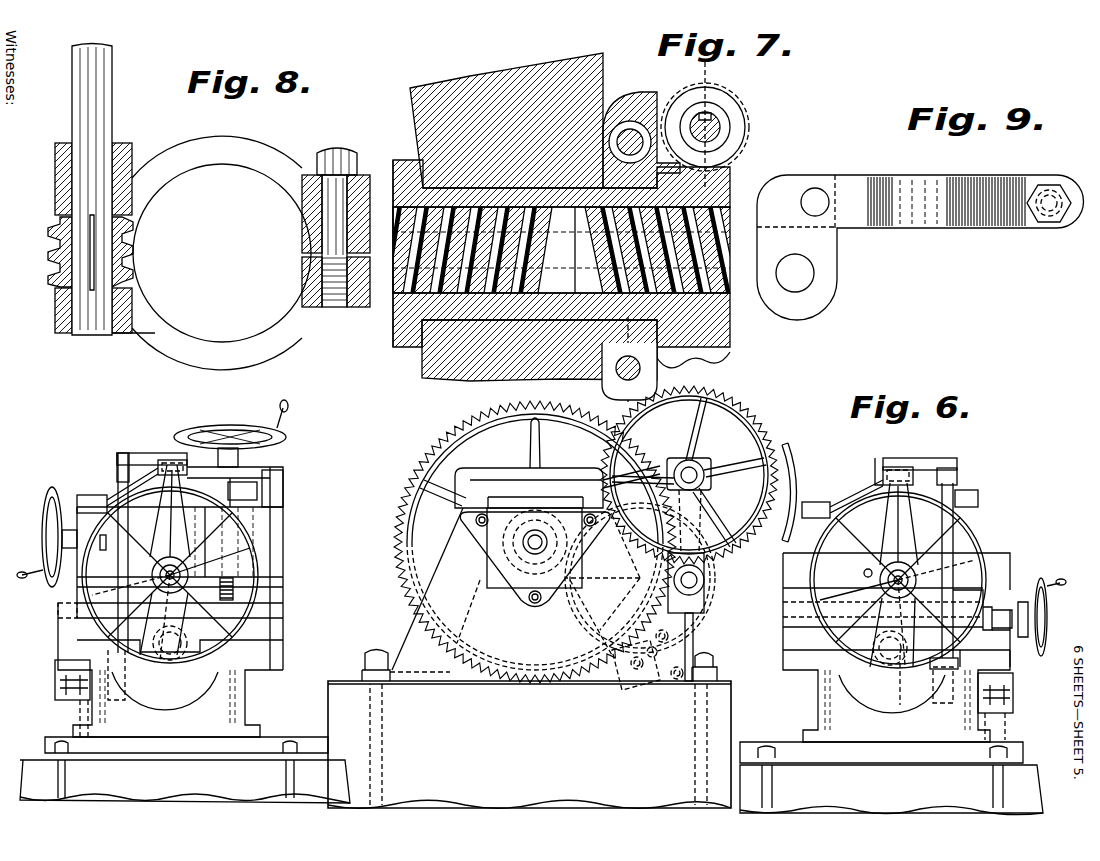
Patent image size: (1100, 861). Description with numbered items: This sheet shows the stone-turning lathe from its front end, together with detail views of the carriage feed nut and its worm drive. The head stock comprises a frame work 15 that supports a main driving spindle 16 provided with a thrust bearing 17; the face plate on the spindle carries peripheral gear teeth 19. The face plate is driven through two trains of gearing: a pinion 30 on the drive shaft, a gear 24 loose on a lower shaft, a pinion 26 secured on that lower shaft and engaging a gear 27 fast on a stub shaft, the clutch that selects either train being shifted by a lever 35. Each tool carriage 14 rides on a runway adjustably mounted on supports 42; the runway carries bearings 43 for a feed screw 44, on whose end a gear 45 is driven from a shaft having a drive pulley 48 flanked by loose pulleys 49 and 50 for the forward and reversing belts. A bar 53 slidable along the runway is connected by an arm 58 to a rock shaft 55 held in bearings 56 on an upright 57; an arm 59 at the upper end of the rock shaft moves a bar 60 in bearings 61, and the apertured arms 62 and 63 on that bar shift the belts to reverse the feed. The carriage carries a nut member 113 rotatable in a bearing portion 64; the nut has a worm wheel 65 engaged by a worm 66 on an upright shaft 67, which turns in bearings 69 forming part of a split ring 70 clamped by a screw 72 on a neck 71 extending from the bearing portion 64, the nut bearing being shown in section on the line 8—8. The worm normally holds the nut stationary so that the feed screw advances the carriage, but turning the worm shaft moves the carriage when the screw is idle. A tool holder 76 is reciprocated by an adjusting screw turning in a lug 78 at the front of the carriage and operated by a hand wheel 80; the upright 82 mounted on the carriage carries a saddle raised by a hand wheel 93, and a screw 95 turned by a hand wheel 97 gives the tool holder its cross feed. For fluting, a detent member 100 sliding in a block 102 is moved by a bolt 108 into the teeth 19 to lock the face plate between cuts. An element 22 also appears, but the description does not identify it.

In FIG. 7, the section line 8— 8 is at (658, 239).
In FIG. 6, the tool carriage 14 is at (283, 652).
In FIG. 6, the frame work 15 is at (452, 524).
In FIG. 6, the main driving spindle 16 is at (527, 560).
In FIG. 6, the thrust bearing 17 is at (492, 535).
In FIG. 6, the gear teeth 19 is at (452, 443).
In FIG. 6, the gear 22 is at (786, 452).
In FIG. 6, the gear 24 is at (733, 655).
In FIG. 6, the pinion 26 is at (706, 590).
In FIG. 6, the gear 27 is at (764, 415).
In FIG. 6, the pinion 30 is at (706, 466).
In FIG. 6, the lever 35 is at (790, 466).
In FIG. 6, the supports 42 is at (60, 720).
In FIG. 6, the bearings 43 is at (175, 660).
In FIG. 7, the feed screw 44 is at (735, 215).
In FIG. 6, the gear 45 is at (178, 705).
In FIG. 6, the pulley 48 is at (960, 563).
In FIG. 6, the loose pulley 49 is at (230, 630).
In FIG. 6, the loose pulley 50 is at (965, 557).
In FIG. 6, the bar 53 is at (55, 690).
In FIG. 6, the rock shaft 55 is at (150, 565).
In FIG. 6, the bearings 56 is at (117, 465).
In FIG. 6, the upright 57 is at (175, 530).
In FIG. 6, the arm 58 is at (82, 700).
In FIG. 6, the arm 59 is at (160, 442).
In FIG. 6, the bar 60 is at (172, 460).
In FIG. 6, the bearings 61 is at (872, 455).
In FIG. 6, the apertured arm 62 is at (95, 486).
In FIG. 6, the apertured arm 63 is at (250, 482).
In FIG. 7, the bearing portion 64 is at (480, 55).
In FIG. 7, the worm wheel 65 is at (730, 340).
In FIG. 8, the worm 66 is at (48, 245).
In FIG. 7, the worm 66 is at (743, 131).
In FIG. 8, the upright shaft 67 is at (72, 95).
In FIG. 7, the upright shaft 67 is at (714, 108).
In FIG. 8, the bearings 69 is at (55, 177).
In FIG. 9, the bearings 69 is at (823, 283).
In FIG. 8, the split ring 70 is at (272, 170).
In FIG. 7, the split ring 70 is at (647, 90).
In FIG. 9, the split ring 70 is at (980, 230).
In FIG. 7, the neck 71 is at (607, 103).
In FIG. 8, the screw 72 is at (352, 150).
In FIG. 7, the screw 72 is at (618, 378).
In FIG. 9, the screw 72 is at (1048, 222).
In FIG. 6, the tool holder 76 is at (805, 560).
In FIG. 6, the lug 78 is at (998, 615).
In FIG. 6, the hand wheel 80 is at (1048, 615).
In FIG. 6, the upright 82 is at (283, 475).
In FIG. 6, the hand wheel 93 is at (240, 430).
In FIG. 6, the screw 95 is at (233, 590).
In FIG. 6, the hand wheel 97 is at (42, 518).
In FIG. 6, the detent member 100 is at (665, 680).
In FIG. 6, the block 102 is at (645, 677).
In FIG. 6, the bolt 108 is at (673, 683).
In FIG. 7, the nut member 113 is at (393, 340).